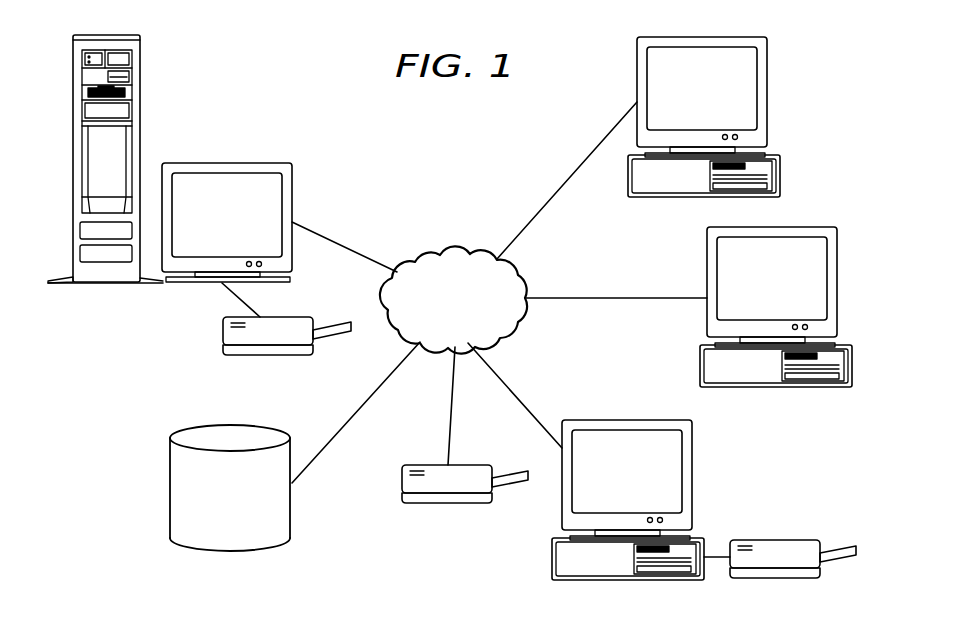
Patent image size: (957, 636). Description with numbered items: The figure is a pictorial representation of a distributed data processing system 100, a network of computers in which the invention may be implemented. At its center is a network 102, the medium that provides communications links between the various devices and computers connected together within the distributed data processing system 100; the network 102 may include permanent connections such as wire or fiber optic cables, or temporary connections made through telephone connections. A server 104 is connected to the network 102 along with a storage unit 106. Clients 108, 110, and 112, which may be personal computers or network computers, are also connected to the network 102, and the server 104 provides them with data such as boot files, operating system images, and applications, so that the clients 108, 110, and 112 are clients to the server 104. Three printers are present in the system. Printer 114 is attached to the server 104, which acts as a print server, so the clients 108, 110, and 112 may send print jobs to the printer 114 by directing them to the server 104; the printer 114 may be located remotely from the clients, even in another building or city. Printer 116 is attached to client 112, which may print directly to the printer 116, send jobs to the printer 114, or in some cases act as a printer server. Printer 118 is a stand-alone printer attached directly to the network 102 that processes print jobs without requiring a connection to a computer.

The distributed data processing system 100 is at (296, 104).
The network 102 is at (477, 328).
The server 104 is at (248, 226).
The storage unit 106 is at (250, 510).
The client 108 is at (721, 104).
The client 110 is at (794, 292).
The client 112 is at (647, 484).
The printer 114 is at (223, 339).
The printer 116 is at (774, 540).
The printer 118 is at (402, 490).